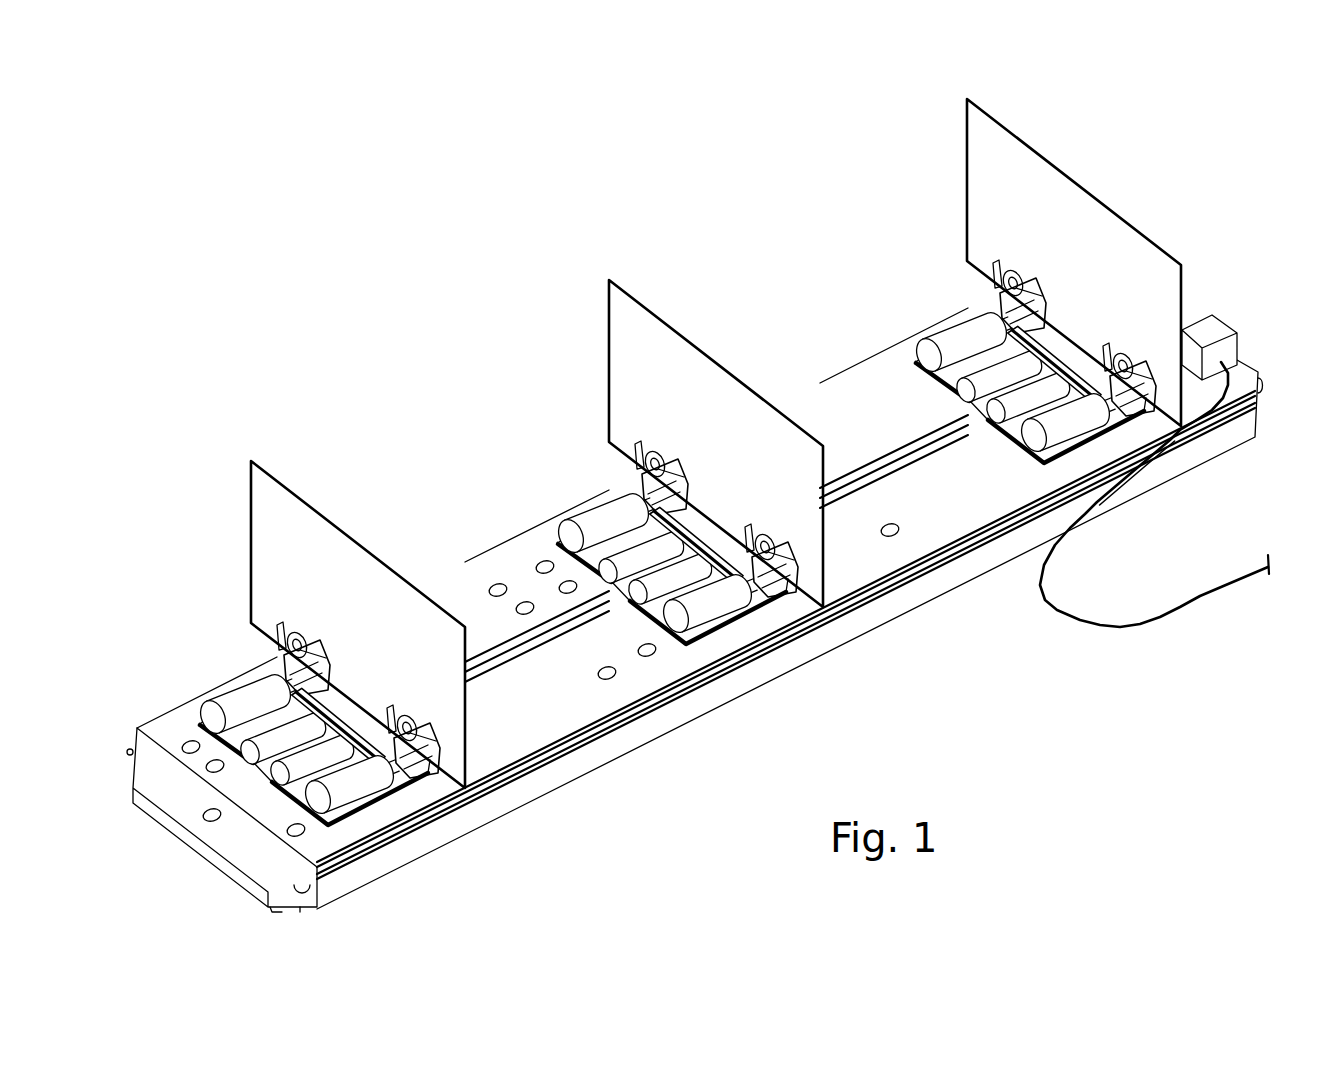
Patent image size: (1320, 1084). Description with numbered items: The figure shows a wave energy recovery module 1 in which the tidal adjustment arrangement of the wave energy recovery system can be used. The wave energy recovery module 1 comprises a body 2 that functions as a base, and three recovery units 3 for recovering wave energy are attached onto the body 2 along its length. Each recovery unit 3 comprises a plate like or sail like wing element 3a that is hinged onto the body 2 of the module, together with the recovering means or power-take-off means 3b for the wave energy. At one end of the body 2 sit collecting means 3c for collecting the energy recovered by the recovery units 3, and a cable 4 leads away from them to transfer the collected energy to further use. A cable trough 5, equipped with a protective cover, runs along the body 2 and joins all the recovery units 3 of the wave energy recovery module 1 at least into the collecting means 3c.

The wave energy recovery module 1 is at (360, 268).
The body 2 is at (598, 752).
The recovery unit 3 is at (172, 486).
The wing element 3a is at (288, 497).
The power-take-off means 3b is at (242, 700).
The collecting means 3c is at (1217, 332).
The cable 4 is at (1117, 628).
The cable trough 5 is at (880, 462).